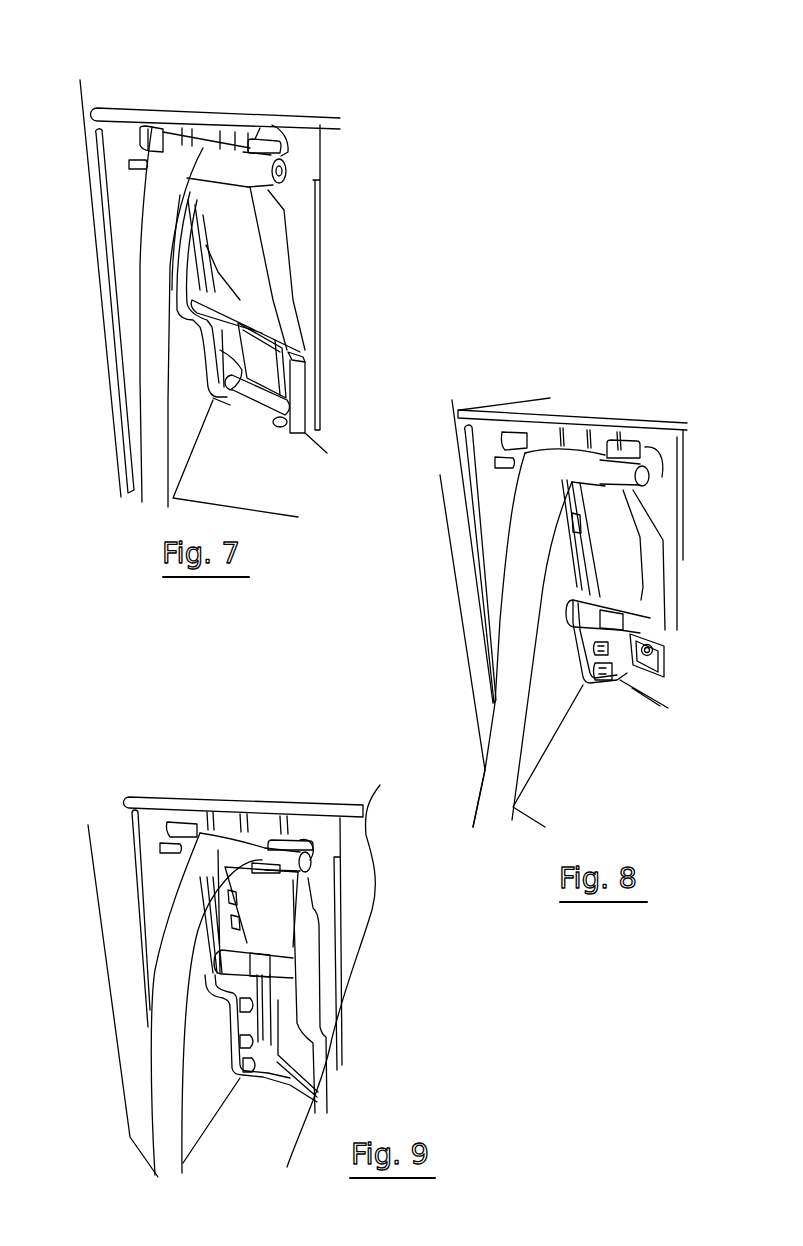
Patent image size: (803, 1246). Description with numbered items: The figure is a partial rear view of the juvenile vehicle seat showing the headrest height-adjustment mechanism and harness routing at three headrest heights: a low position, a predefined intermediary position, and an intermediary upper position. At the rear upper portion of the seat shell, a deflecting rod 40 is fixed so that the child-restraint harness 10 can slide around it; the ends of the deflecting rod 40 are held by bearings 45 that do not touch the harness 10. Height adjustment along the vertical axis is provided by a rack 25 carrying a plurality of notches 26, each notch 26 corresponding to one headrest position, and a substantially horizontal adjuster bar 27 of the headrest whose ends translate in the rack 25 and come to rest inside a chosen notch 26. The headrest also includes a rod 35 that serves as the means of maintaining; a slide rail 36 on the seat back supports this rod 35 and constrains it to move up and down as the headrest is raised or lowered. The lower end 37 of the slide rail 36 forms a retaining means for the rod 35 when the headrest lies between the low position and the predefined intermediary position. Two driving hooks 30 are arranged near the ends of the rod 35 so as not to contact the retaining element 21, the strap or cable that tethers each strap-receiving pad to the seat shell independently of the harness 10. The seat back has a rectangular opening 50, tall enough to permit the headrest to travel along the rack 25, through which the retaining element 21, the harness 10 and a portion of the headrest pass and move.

In FIG. 7, the child-restraint harness 10 is at (232, 223).
In FIG. 8, the child-restraint harness 10 is at (537, 480).
In FIG. 9, the child-restraint harness 10 is at (203, 865).
In FIG. 7, the retaining element 21 is at (293, 375).
In FIG. 8, the retaining element 21 is at (603, 680).
In FIG. 9, the retaining element 21 is at (267, 1000).
In FIG. 9, the rack 25 is at (240, 1048).
In FIG. 8, the notch 26 is at (590, 685).
In FIG. 7, the adjuster bar 27 is at (217, 362).
In FIG. 7, the driving hook 30 is at (290, 423).
In FIG. 8, the driving hook 30 is at (661, 640).
In FIG. 7, the rod 35 is at (273, 317).
In FIG. 8, the rod 35 is at (625, 678).
In FIG. 9, the rod 35 is at (300, 960).
In FIG. 7, the slide rail 36 is at (197, 270).
In FIG. 8, the slide rail 36 is at (563, 565).
In FIG. 9, the slide rail 36 is at (217, 912).
In FIG. 9, the lower end of the slide rail 37 is at (222, 1003).
In FIG. 7, the deflecting rod 40 is at (287, 170).
In FIG. 8, the deflecting rod 40 is at (640, 477).
In FIG. 9, the deflecting rod 40 is at (310, 862).
In FIG. 7, the bearing 45 is at (147, 135).
In FIG. 9, the bearing 45 is at (280, 840).
In FIG. 8, the opening 50 is at (670, 660).
In FIG. 9, the opening 50 is at (297, 1047).